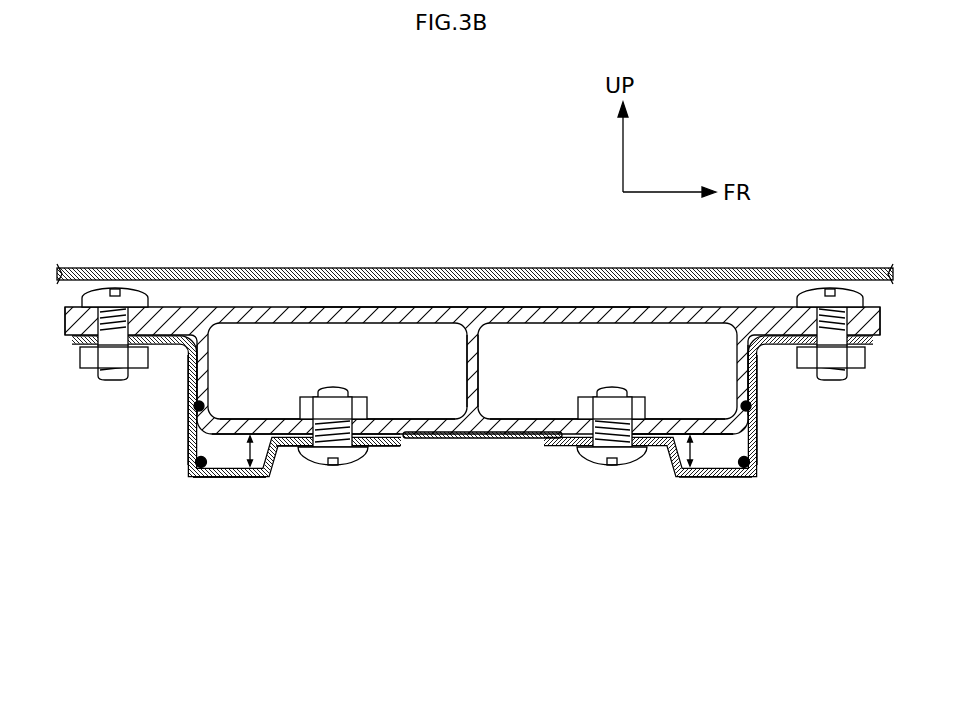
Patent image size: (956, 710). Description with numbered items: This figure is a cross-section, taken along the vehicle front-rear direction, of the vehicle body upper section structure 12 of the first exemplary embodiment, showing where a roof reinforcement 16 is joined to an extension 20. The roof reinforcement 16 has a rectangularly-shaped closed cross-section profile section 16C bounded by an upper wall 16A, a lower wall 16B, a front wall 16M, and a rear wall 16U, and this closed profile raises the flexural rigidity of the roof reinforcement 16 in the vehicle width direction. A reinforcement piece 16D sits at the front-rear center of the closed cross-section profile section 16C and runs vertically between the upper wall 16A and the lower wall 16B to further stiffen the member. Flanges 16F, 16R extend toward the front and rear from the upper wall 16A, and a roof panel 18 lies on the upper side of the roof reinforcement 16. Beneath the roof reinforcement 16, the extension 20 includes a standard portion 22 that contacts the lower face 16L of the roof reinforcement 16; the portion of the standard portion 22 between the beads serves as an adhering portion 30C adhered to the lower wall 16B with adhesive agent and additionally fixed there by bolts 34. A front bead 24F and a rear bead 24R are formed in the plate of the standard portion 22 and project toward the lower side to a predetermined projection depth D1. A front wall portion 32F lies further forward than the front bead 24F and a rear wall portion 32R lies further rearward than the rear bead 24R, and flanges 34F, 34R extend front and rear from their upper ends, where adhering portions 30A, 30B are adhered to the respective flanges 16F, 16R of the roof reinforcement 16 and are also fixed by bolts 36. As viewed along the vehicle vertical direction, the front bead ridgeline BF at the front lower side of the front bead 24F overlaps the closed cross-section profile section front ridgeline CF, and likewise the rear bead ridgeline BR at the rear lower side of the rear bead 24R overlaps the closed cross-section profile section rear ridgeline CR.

The battery pack 12 is at (390, 560).
The roof reinforcement 16 is at (340, 291).
The upper wall 16A is at (597, 317).
The lower wall 16B is at (413, 423).
The closed cross-section profile section 16C is at (706, 446).
The reinforcement piece 16D is at (467, 362).
The flange 16F is at (881, 326).
The lower face 16L is at (381, 449).
The front wall 16M is at (740, 358).
The flange 16R is at (66, 322).
The rear wall 16U is at (203, 370).
The roof panel 18 is at (400, 254).
The extension 20 is at (186, 483).
The standard portion 22 is at (500, 447).
The front bead 24F is at (742, 478).
The rear bead 24R is at (224, 478).
The adhering portion 30A is at (778, 334).
The adhering portion 30B is at (168, 307).
The adhering portion 30C is at (443, 447).
The front wall portion 32F is at (760, 380).
The rear wall portion 32R is at (187, 383).
The bolt 34 is at (325, 466).
The flange 34F is at (866, 345).
The flange 34R is at (81, 350).
The bolt 36 is at (138, 292).
The rear bead ridgeline BR is at (195, 458).
The front bead ridgeline BF is at (752, 455).
The closed cross-section profile section rear ridgeline CR is at (204, 405).
The closed cross-section profile section front ridgeline CF is at (741, 405).
The projection depth D1 is at (272, 473).